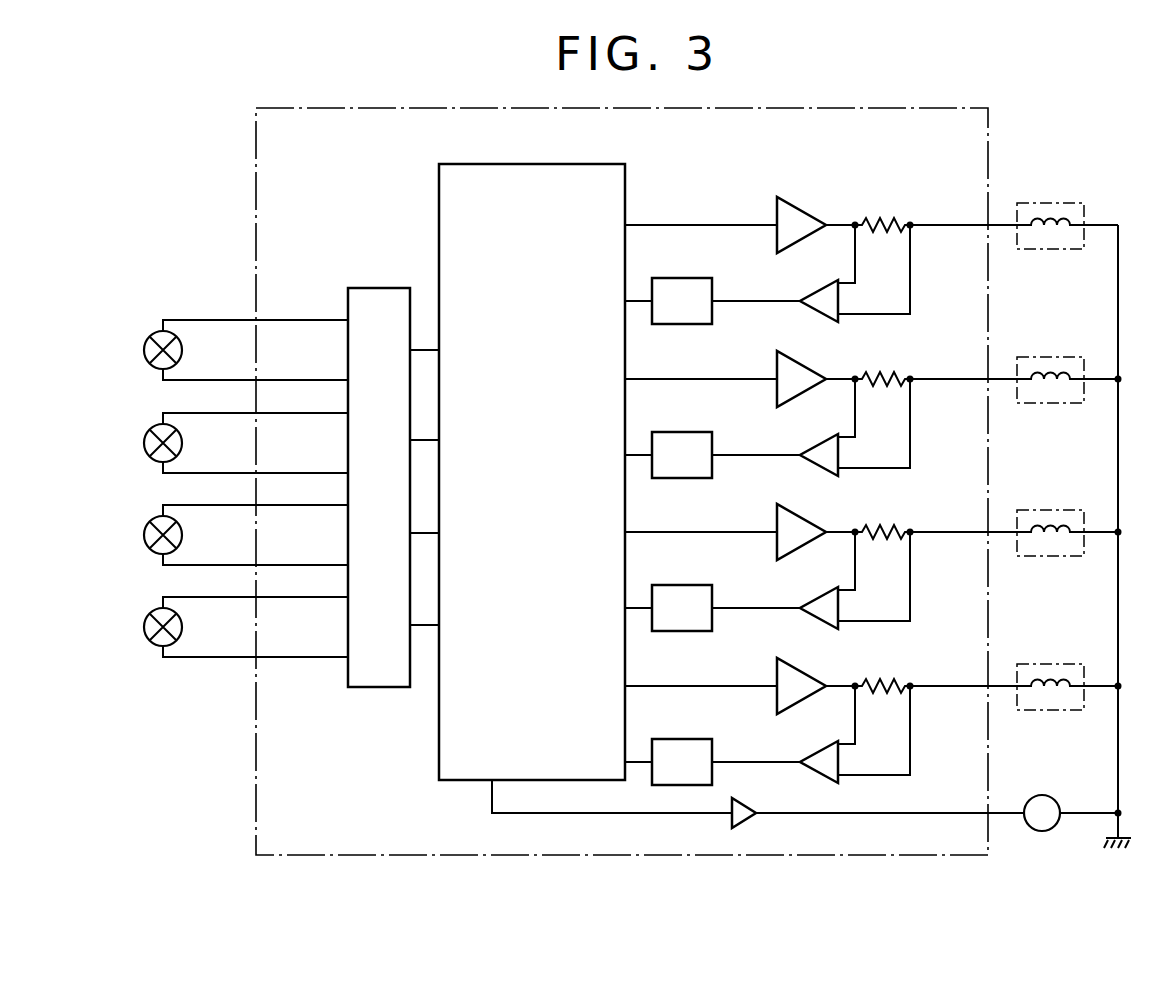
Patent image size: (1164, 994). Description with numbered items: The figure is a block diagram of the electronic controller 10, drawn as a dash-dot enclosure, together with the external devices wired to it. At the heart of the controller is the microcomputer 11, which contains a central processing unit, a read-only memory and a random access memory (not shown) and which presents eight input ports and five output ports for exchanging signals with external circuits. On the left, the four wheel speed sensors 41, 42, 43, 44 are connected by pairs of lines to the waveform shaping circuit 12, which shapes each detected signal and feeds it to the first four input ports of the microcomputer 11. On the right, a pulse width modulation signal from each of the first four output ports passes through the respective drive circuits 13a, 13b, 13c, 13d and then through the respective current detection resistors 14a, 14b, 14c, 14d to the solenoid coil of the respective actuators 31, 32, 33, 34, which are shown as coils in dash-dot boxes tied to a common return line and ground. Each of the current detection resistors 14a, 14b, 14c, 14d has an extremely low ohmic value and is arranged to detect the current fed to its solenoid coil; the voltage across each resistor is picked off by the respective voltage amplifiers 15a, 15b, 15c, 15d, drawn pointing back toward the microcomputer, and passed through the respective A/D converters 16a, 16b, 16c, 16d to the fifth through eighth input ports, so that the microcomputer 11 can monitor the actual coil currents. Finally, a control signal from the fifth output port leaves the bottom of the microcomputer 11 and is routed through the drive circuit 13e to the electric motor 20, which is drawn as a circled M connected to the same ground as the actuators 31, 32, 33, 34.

The electronic controller 10 is at (952, 109).
The microcomputer 11 is at (626, 178).
The waveform shaping circuit 12 is at (357, 688).
The drive circuit 13a is at (820, 191).
The drive circuit 13b is at (820, 345).
The drive circuit 13c is at (820, 498).
The drive circuit 13d is at (820, 652).
The drive circuit 13e is at (745, 802).
The current detection resistor 14a is at (889, 215).
The current detection resistor 14b is at (889, 369).
The current detection resistor 14c is at (889, 522).
The current detection resistor 14d is at (889, 676).
The voltage amplifier 15a is at (816, 288).
The voltage amplifier 15b is at (816, 442).
The voltage amplifier 15c is at (816, 595).
The voltage amplifier 15d is at (816, 749).
The A/D converter 16a is at (678, 278).
The A/D converter 16b is at (678, 432).
The A/D converter 16c is at (678, 585).
The A/D converter 16d is at (678, 739).
The electric motor 20 is at (1042, 831).
The actuator 31 is at (1040, 203).
The actuator 32 is at (1040, 357).
The actuator 33 is at (1040, 510).
The actuator 34 is at (1040, 664).
The wheel speed sensor 41 is at (142, 351).
The wheel speed sensor 42 is at (142, 444).
The wheel speed sensor 43 is at (142, 536).
The wheel speed sensor 44 is at (142, 628).